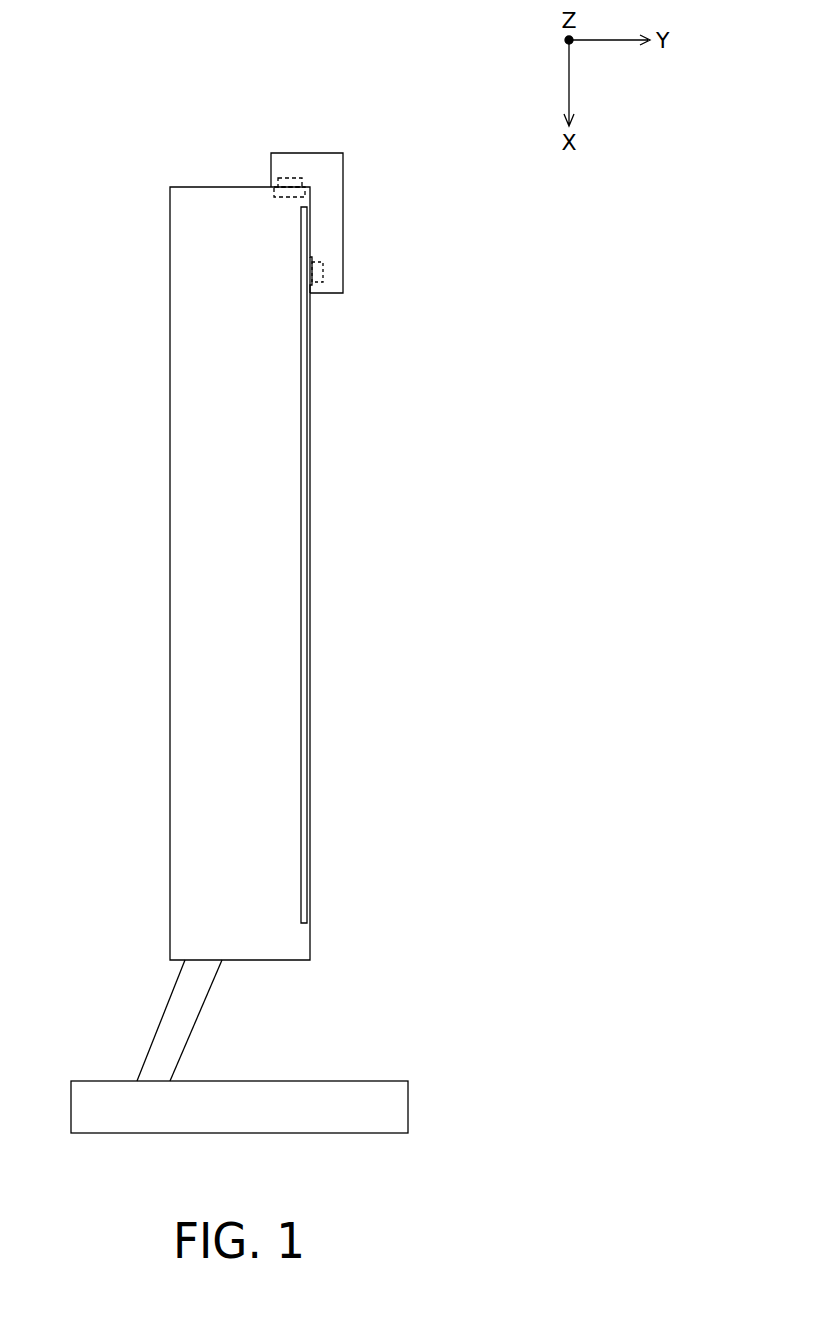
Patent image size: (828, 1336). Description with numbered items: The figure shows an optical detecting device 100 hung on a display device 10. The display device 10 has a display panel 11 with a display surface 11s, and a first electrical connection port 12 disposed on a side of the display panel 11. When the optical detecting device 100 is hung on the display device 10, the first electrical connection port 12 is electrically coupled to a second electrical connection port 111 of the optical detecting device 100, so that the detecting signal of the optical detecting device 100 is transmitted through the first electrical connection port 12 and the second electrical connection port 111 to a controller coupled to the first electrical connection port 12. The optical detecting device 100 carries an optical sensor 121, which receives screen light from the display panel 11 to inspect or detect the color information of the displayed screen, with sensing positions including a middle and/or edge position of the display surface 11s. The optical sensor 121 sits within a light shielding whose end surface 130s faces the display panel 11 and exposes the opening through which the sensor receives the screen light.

The display device 10 is at (136, 509).
The display panel 11 is at (305, 432).
The display surface 11s is at (310, 489).
The optical detecting device 100 is at (307, 153).
The second electrical connection port 111 is at (292, 178).
The first electrical connection port 12 is at (293, 197).
The optical sensor 121 is at (323, 270).
The end surface 130s is at (305, 273).